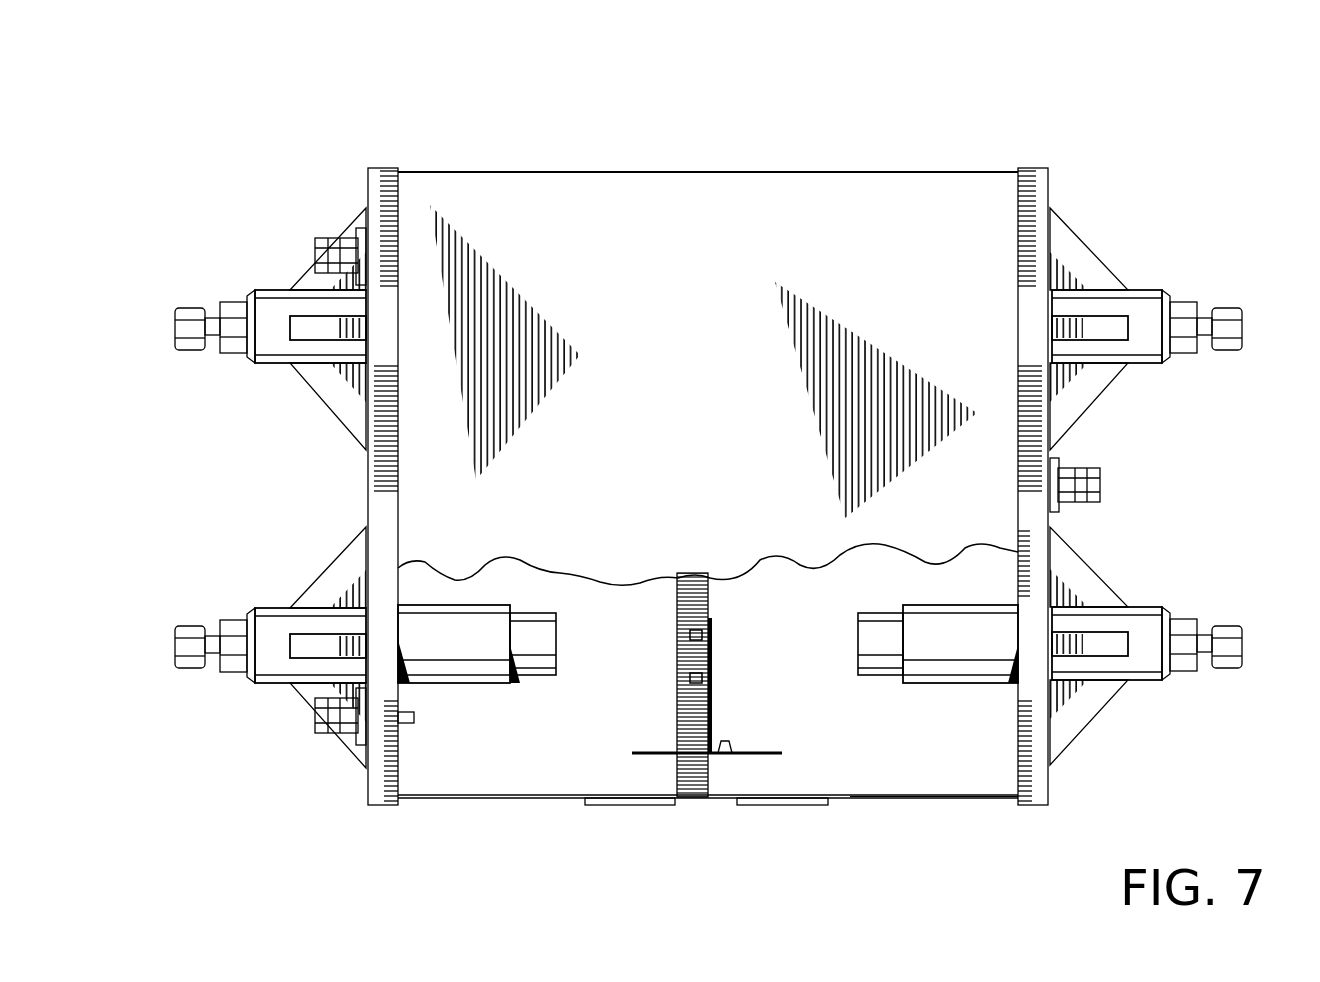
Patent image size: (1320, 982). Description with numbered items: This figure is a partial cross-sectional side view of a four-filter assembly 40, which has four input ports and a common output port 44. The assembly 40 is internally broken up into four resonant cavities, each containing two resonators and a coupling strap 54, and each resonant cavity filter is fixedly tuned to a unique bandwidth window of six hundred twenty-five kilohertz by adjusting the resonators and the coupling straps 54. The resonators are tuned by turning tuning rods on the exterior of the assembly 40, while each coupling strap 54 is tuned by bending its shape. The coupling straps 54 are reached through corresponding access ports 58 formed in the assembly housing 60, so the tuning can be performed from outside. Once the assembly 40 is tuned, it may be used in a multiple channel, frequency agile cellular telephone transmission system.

The four-filter assembly 40 is at (1040, 128).
The common output port 44 is at (1098, 488).
The coupling strap 54 is at (775, 756).
The access port 58 is at (606, 806).
The assembly housing 60 is at (990, 800).